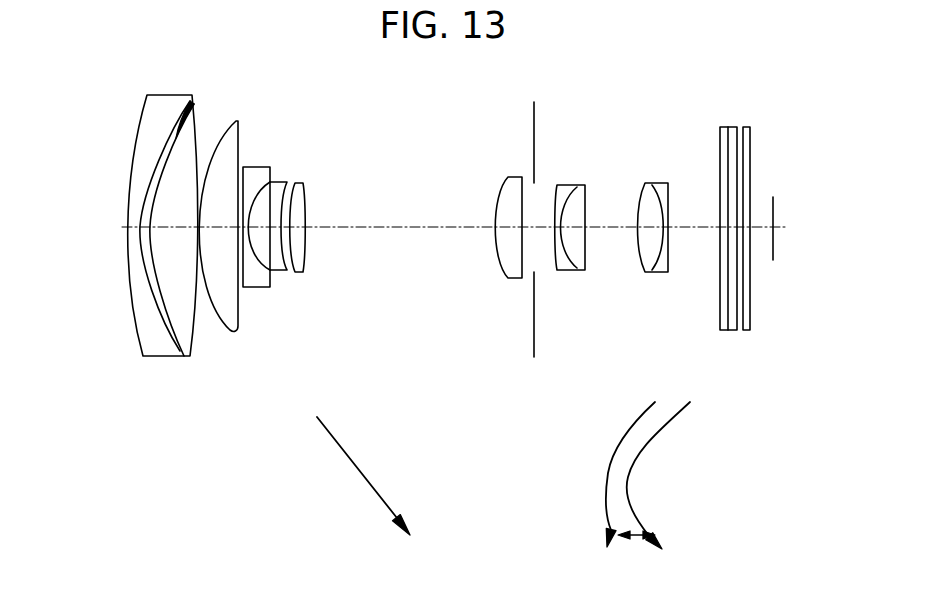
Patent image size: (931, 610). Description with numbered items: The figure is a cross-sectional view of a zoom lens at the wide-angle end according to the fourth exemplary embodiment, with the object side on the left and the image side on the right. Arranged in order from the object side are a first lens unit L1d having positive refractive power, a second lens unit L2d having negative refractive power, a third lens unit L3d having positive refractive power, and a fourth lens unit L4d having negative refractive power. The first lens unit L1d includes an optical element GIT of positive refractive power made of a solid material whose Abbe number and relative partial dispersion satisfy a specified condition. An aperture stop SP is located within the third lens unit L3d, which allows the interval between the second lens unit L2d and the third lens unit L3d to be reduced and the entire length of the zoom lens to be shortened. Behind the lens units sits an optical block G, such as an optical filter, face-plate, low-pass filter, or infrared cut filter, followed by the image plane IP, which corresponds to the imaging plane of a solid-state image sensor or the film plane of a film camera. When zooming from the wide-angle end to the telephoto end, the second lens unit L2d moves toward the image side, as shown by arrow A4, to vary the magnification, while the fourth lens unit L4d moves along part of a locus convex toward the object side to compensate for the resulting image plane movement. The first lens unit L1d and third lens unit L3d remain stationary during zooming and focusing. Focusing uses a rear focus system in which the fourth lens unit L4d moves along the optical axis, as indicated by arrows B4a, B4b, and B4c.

The optical element GIT is at (192, 102).
The first lens unit L1d is at (123, 372).
The second lens unit L2d is at (258, 332).
The third lens unit L3d is at (597, 382).
The fourth lens unit L4d is at (717, 340).
The aperture stop SP is at (534, 213).
The optical block G is at (752, 118).
The image plane IP is at (773, 206).
The arrow A4 is at (357, 464).
The arrow B4a is at (629, 477).
The arrow B4b is at (606, 474).
The arrow B4c is at (635, 538).